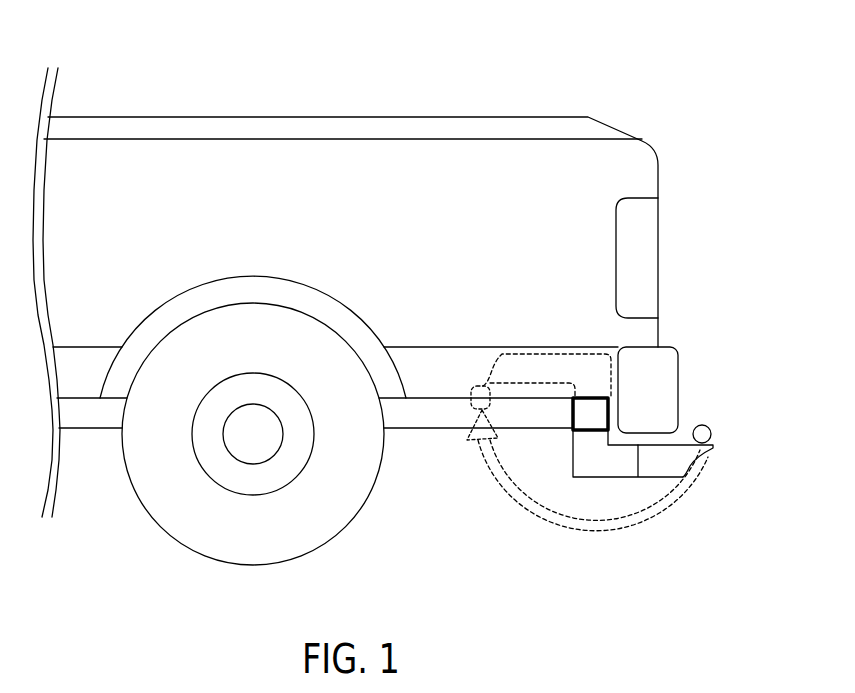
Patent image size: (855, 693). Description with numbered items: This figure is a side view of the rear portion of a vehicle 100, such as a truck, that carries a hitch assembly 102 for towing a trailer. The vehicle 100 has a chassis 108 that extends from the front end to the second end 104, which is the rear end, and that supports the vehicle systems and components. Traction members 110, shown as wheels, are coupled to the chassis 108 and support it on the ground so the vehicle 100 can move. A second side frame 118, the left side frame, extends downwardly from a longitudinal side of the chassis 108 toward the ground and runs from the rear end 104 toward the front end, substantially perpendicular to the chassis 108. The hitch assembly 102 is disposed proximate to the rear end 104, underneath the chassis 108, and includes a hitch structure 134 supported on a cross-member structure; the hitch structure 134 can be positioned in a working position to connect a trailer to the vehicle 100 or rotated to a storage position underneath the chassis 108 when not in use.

The vehicle 100 is at (654, 91).
The hitch assembly 102 is at (611, 486).
The second end 104 is at (661, 328).
The chassis 108 is at (437, 348).
The traction member 110 is at (222, 553).
The second side frame 118 is at (436, 413).
The hitch structure 134 is at (658, 485).